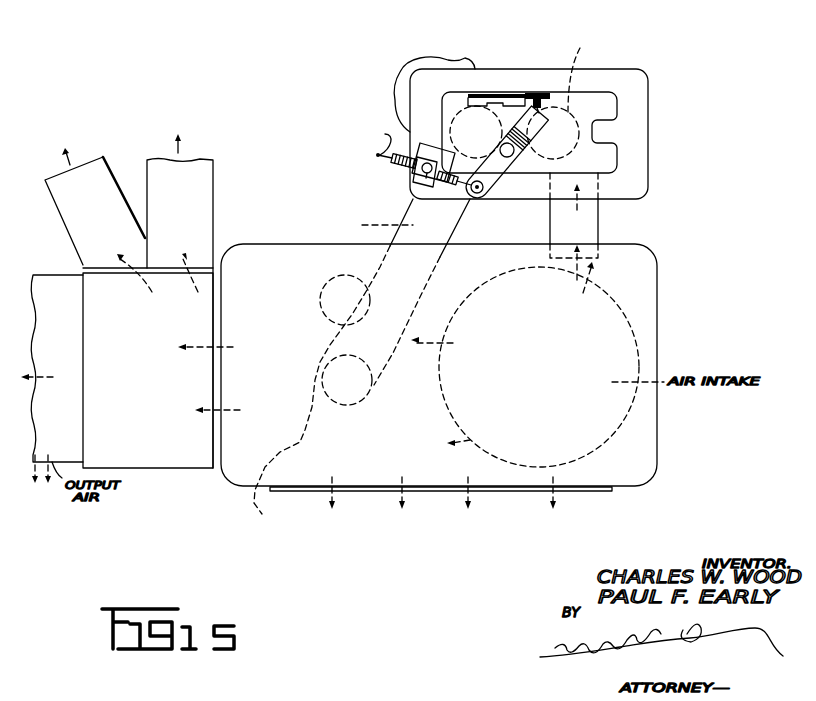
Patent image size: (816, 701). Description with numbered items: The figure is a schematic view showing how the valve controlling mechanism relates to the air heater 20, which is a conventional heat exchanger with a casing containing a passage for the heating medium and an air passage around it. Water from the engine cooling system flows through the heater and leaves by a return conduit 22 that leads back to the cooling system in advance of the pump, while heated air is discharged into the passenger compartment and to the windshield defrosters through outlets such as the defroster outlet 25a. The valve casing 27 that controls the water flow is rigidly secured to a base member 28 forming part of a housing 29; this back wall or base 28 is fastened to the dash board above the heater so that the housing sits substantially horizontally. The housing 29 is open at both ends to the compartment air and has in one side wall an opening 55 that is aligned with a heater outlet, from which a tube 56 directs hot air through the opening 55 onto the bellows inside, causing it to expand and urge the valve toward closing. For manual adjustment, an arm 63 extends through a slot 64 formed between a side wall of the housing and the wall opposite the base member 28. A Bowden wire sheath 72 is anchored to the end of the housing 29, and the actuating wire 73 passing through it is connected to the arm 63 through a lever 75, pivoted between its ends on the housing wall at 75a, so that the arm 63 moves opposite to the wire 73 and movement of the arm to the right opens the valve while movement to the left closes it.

The air heater 20 is at (642, 273).
The return conduit 22 is at (322, 297).
The windshield defroster outlet 25a is at (138, 163).
The valve casing 27 is at (401, 79).
The base member 28 is at (634, 145).
The housing 29 is at (602, 107).
The opening 55 is at (587, 165).
The tube 56 is at (587, 219).
The arm 63 is at (528, 97).
The slot 64 is at (478, 97).
The sheath 72 is at (400, 176).
The actuating wire 73 is at (378, 162).
The lever 75 is at (496, 181).
The pivot 75a is at (514, 149).